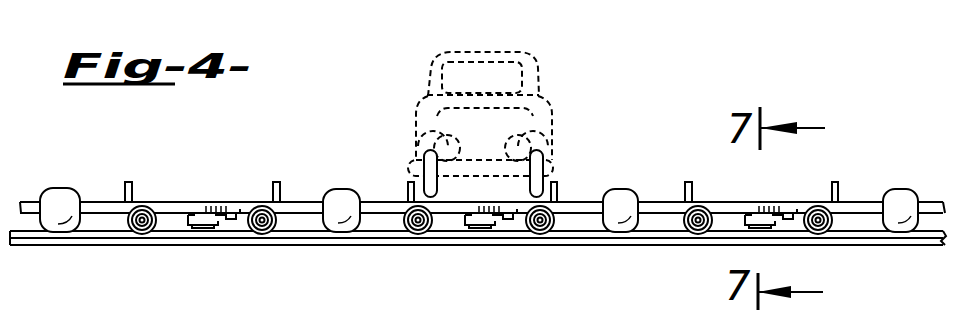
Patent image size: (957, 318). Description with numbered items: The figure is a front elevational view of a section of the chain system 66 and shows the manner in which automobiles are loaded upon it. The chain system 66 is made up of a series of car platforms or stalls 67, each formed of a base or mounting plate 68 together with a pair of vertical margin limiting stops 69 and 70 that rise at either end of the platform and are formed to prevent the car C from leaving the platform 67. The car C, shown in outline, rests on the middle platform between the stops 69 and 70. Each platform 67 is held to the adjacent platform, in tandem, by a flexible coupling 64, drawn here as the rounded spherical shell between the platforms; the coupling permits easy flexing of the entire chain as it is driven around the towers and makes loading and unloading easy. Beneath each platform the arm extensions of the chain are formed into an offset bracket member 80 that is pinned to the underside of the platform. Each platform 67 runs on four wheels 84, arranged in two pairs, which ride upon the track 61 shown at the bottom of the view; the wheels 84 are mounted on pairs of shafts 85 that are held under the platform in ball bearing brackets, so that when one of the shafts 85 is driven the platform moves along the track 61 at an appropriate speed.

The car C is at (543, 63).
The track 61 is at (485, 247).
The flexible coupling 64 is at (352, 233).
The chain system 66 is at (300, 191).
The car platform 67 is at (507, 193).
The base plate 68 is at (465, 198).
The vertical margin limiting stop 69 is at (557, 184).
The vertical margin limiting stop 70 is at (408, 184).
The offset bracket member 80 is at (782, 224).
The wheels 84 is at (253, 210).
The shafts 85 is at (258, 236).